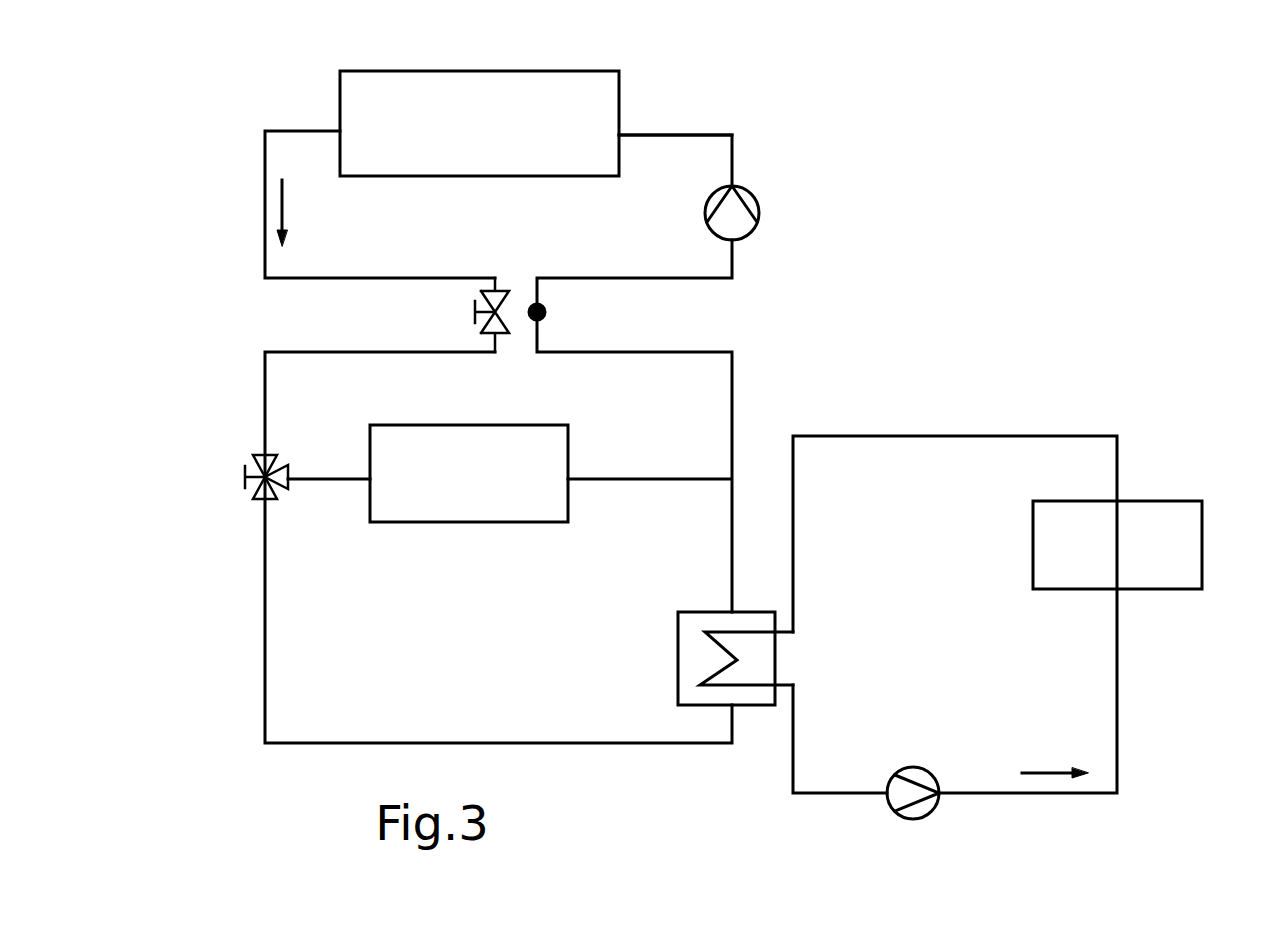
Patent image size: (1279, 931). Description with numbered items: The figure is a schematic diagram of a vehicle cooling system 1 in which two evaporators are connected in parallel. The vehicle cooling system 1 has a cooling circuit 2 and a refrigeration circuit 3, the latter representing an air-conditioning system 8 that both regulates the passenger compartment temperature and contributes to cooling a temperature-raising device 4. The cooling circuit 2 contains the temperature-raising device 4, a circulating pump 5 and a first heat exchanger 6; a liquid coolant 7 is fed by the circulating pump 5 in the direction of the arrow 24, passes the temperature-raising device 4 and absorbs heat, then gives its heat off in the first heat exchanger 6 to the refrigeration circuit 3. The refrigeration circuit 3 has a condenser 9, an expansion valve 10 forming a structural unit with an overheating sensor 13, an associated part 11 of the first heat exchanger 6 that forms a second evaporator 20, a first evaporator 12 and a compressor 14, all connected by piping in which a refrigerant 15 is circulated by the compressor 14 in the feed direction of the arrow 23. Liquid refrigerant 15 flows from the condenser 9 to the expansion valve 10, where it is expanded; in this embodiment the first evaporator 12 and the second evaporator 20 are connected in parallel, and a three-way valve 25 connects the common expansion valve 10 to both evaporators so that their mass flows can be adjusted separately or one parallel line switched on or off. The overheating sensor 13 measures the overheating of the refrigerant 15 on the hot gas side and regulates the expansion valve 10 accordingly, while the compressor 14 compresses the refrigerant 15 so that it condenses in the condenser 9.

The vehicle cooling system 1 is at (1063, 210).
The cooling circuit 2 is at (1163, 413).
The refrigeration circuit 3 is at (227, 201).
The temperature-raising device 4 is at (1166, 524).
The circulating pump 5 is at (928, 812).
The first heat exchanger 6 is at (745, 660).
The coolant 7 is at (988, 436).
The air-conditioning system 8 is at (216, 312).
The condenser 9 is at (543, 100).
The expansion valve 10 is at (498, 294).
The associated part of the first heat exchanger 11 is at (707, 722).
The first evaporator 12 is at (483, 492).
The overheating sensor 13 is at (545, 312).
The compressor 14 is at (757, 225).
The refrigerant 15 is at (690, 133).
The second evaporator 20 is at (725, 630).
The arrow 23 is at (284, 190).
The arrow 24 is at (1045, 773).
The 3-way valve 25 is at (273, 462).